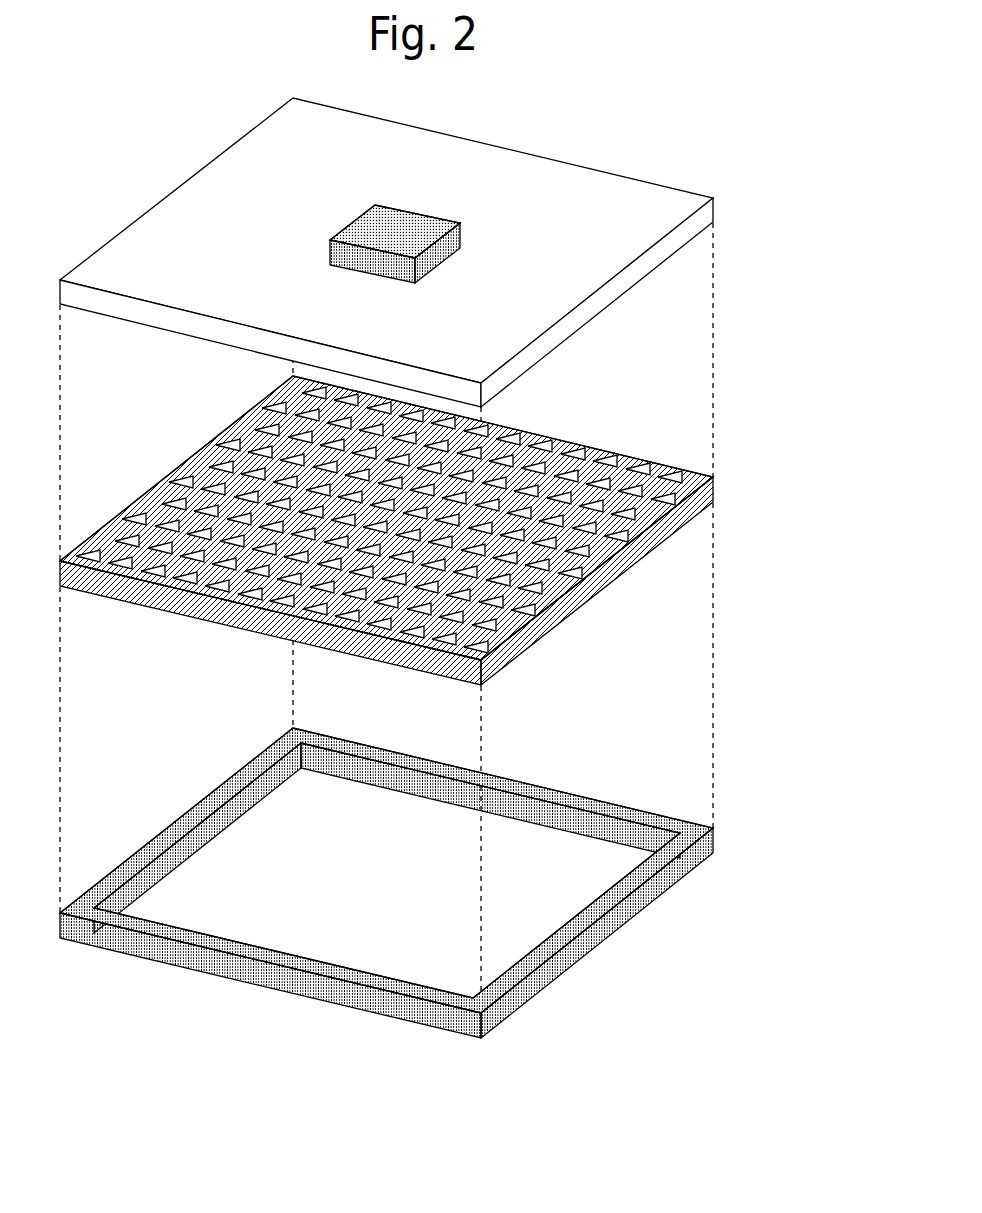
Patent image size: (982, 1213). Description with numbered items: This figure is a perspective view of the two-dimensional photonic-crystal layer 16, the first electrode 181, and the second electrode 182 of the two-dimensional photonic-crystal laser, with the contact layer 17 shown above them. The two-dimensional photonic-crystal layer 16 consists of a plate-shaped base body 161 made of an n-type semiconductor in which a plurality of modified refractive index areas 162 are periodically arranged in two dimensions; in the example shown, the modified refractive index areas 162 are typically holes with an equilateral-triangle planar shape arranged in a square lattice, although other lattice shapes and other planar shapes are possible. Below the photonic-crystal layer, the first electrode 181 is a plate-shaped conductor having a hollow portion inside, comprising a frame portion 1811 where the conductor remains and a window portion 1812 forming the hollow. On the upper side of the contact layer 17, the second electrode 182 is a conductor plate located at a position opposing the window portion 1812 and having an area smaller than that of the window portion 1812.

The two-dimensional photonic-crystal layer 16 is at (433, 528).
The base body 161 is at (577, 452).
The modified refractive index areas 162 is at (560, 454).
The contact layer 17 is at (637, 210).
The first electrode 181 is at (440, 878).
The frame portion 1811 is at (610, 922).
The window portion 1812 is at (362, 882).
The second electrode 182 is at (405, 210).